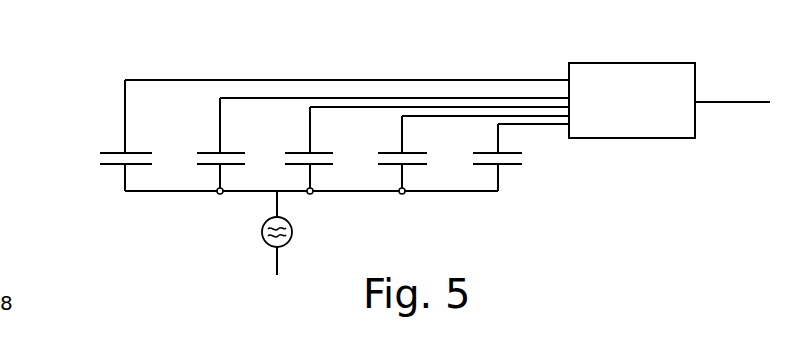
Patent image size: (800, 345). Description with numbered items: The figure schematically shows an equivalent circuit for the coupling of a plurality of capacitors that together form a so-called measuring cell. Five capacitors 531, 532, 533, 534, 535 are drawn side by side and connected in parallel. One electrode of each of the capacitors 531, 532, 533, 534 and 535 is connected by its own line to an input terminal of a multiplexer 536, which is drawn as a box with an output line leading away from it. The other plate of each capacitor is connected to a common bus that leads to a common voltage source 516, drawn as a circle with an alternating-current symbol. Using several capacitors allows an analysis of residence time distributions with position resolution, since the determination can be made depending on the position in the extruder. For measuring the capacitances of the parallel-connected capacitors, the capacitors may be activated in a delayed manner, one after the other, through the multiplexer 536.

The capacitor 531 is at (522, 159).
The capacitor 532 is at (380, 156).
The capacitor 533 is at (287, 156).
The capacitor 534 is at (197, 152).
The capacitor 535 is at (100, 152).
The multiplexer 536 is at (625, 63).
The common voltage source 516 is at (292, 231).